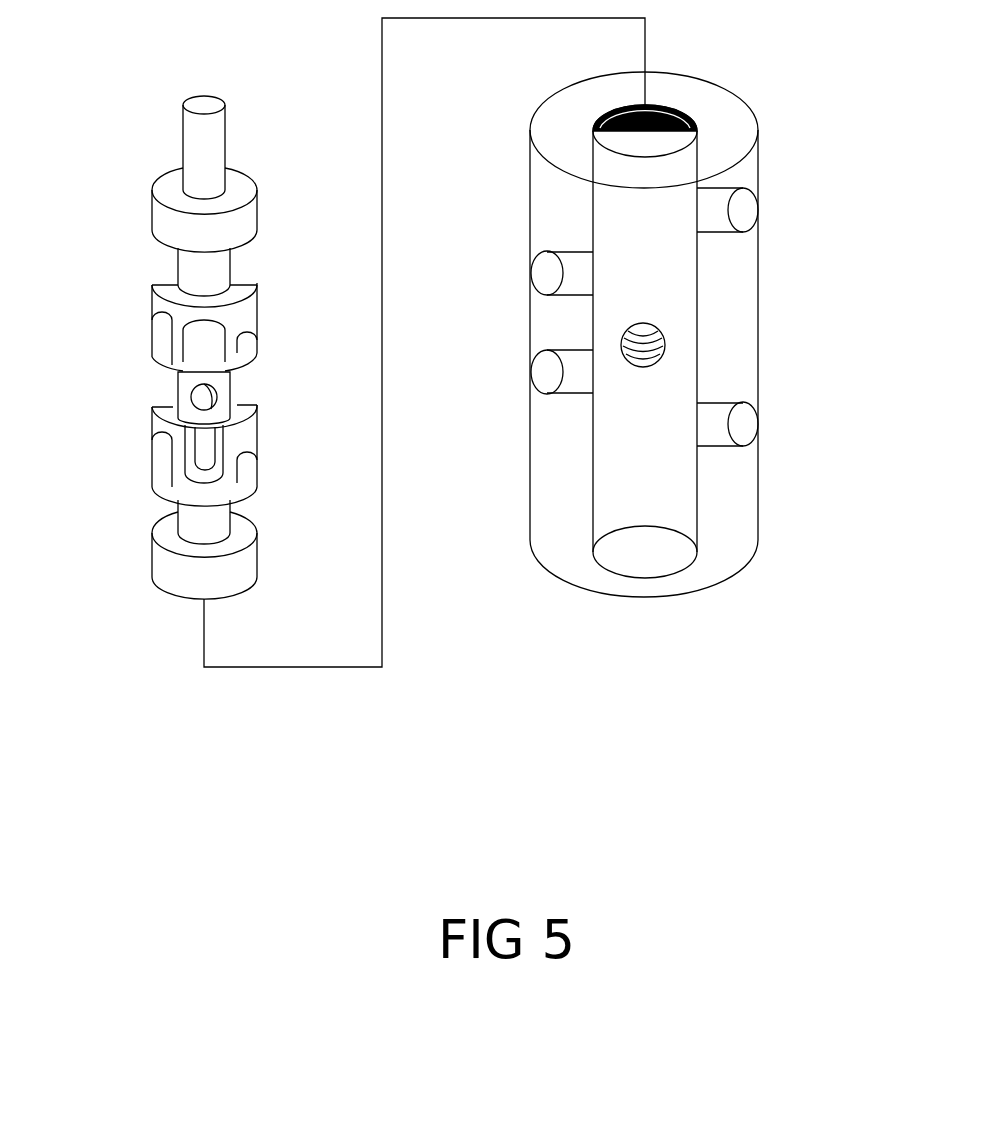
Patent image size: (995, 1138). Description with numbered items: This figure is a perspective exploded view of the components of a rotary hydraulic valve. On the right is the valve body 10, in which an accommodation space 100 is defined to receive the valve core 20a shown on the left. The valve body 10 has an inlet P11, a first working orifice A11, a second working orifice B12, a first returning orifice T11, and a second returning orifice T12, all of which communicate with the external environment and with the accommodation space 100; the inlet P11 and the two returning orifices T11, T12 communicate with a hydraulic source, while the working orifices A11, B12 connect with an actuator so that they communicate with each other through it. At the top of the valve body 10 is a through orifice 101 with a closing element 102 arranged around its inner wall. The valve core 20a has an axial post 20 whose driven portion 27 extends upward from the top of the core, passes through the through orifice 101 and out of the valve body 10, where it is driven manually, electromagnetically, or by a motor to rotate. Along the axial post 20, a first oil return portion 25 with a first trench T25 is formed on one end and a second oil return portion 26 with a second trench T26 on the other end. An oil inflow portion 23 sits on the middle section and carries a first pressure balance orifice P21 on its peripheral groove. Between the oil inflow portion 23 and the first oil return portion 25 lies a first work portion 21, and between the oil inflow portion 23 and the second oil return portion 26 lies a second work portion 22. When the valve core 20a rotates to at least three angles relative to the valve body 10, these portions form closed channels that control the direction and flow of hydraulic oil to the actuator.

The valve core 20a is at (148, 262).
The driven portion 27 is at (202, 142).
The axial post 20 is at (242, 223).
The first oil return portion 25 is at (275, 272).
The first trench T25 is at (218, 265).
The first work portion 21 is at (240, 358).
The oil inflow portion 23 is at (227, 391).
The first pressure balance orifice P21 is at (213, 397).
The second work portion 22 is at (187, 495).
The second oil return portion 26 is at (275, 522).
The second trench T26 is at (215, 518).
The valve body 10 is at (643, 319).
The accommodation space 100 is at (678, 315).
The through orifice 101 is at (628, 86).
The closing element 102 is at (613, 112).
The first returning orifice T11 is at (742, 210).
The second returning orifice T12 is at (742, 424).
The first working orifice A11 is at (547, 273).
The second working orifice B12 is at (547, 372).
The inlet P11 is at (667, 347).